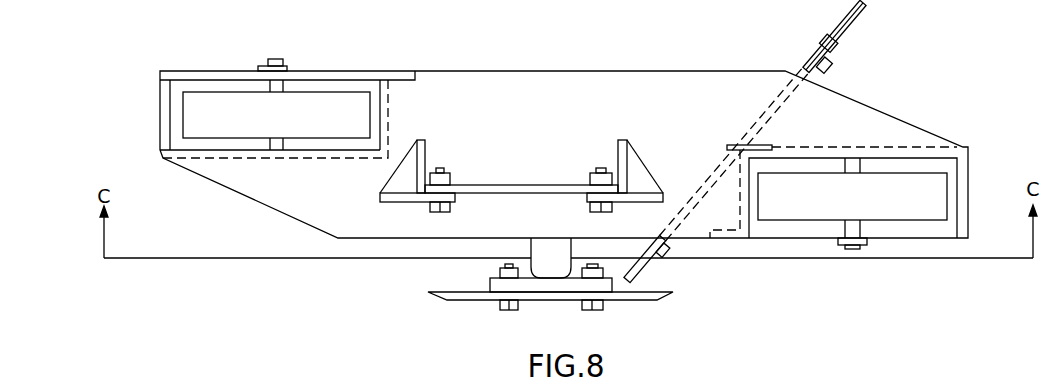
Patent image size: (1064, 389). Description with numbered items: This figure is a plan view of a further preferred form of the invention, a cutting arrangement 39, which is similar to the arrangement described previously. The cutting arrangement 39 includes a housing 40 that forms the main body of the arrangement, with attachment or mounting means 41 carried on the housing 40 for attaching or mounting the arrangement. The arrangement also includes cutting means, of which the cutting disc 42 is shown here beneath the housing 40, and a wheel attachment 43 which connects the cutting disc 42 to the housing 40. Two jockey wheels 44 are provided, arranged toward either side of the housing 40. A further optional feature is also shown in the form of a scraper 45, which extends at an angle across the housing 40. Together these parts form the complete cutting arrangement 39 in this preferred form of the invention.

The cutting arrangement 39 is at (946, 114).
The housing 40 is at (510, 98).
The attachment or mounting means 41 is at (513, 187).
The cutting disc 42 is at (640, 293).
The wheel attachment 43 is at (548, 257).
The jockey wheels 44 is at (918, 212).
The scraper 45 is at (802, 77).